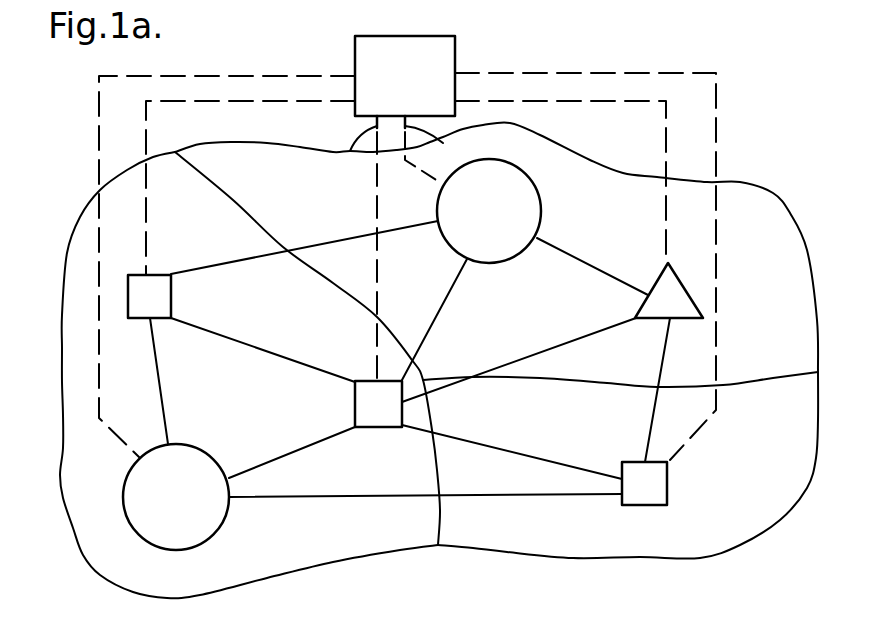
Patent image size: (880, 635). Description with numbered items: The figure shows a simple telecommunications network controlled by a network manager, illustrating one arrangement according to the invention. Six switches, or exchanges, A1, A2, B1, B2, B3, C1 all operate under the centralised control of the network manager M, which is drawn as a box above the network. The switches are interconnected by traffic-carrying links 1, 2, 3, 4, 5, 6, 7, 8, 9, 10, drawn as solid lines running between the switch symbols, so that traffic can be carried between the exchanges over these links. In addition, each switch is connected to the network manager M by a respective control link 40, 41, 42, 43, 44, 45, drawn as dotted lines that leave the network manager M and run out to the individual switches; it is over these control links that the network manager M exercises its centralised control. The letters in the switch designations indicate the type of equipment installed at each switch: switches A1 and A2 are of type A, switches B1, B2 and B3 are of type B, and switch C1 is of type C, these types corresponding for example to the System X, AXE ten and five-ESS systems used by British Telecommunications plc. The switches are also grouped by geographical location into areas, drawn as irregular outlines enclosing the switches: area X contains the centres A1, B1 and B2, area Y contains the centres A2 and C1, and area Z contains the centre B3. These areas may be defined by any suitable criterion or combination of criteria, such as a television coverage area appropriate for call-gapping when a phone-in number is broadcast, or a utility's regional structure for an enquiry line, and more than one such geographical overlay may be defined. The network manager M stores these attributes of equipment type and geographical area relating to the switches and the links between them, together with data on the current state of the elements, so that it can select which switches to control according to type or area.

The traffic-carrying link 1 is at (333, 237).
The traffic-carrying link 2 is at (590, 267).
The traffic-carrying link 3 is at (650, 413).
The traffic-carrying link 4 is at (498, 497).
The traffic-carrying link 5 is at (163, 405).
The traffic-carrying link 6 is at (272, 353).
The traffic-carrying link 7 is at (441, 307).
The traffic-carrying link 8 is at (570, 340).
The traffic-carrying link 9 is at (537, 456).
The traffic-carrying link 10 is at (310, 445).
The control link 40 is at (303, 76).
The control link 41 is at (302, 102).
The control link 42 is at (348, 152).
The control link 43 is at (440, 143).
The control link 44 is at (472, 102).
The control link 45 is at (505, 73).
The network manager M is at (405, 76).
The switch A1 is at (218, 530).
The switch A2 is at (540, 198).
The switch B1 is at (171, 295).
The switch B2 is at (377, 427).
The switch B3 is at (667, 488).
The switch C1 is at (680, 278).
The area X is at (241, 375).
The area Y is at (496, 247).
The area Z is at (620, 465).